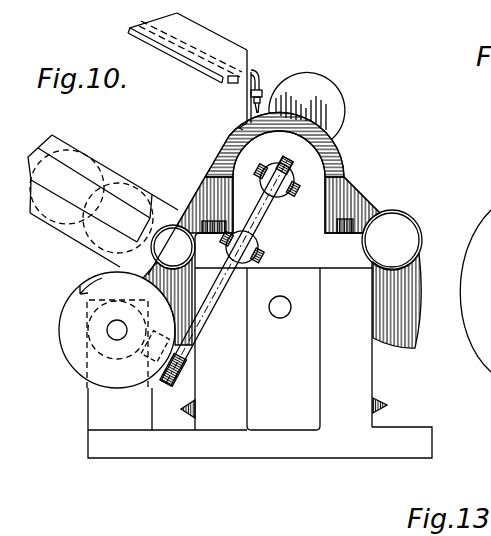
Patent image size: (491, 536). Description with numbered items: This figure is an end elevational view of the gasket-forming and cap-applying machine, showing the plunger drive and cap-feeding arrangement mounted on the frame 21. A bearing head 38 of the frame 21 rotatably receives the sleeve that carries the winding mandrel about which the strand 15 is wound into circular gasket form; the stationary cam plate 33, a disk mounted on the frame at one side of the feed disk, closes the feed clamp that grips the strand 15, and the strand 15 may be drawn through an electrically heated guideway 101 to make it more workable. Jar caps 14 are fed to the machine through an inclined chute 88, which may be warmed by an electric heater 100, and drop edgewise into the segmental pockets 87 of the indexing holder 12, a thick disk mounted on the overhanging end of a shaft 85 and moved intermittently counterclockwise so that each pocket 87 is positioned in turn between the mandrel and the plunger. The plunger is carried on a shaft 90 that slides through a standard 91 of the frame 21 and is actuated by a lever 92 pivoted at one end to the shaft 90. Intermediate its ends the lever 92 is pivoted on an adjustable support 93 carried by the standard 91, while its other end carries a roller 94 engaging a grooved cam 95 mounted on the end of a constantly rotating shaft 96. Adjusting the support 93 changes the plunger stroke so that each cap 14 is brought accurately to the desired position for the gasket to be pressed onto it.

The indexing holder 12 is at (420, 276).
The jar cap 14 is at (387, 228).
The strand 15 is at (261, 72).
The frame 21 is at (210, 448).
The cam plate 33 is at (315, 86).
The bearing head 38 is at (335, 147).
The shaft 85 is at (283, 316).
The segmental pocket 87 is at (408, 248).
The inclined chute 88 is at (100, 173).
The shaft 90 is at (293, 173).
The standard 91 is at (305, 373).
The lever 92 is at (204, 320).
The adjustable support 93 is at (258, 246).
The roller 94 is at (133, 393).
The grooved cam 95 is at (80, 358).
The rotating shaft 96 is at (109, 333).
The electric heater 100 is at (110, 219).
The heated guideway 101 is at (197, 35).